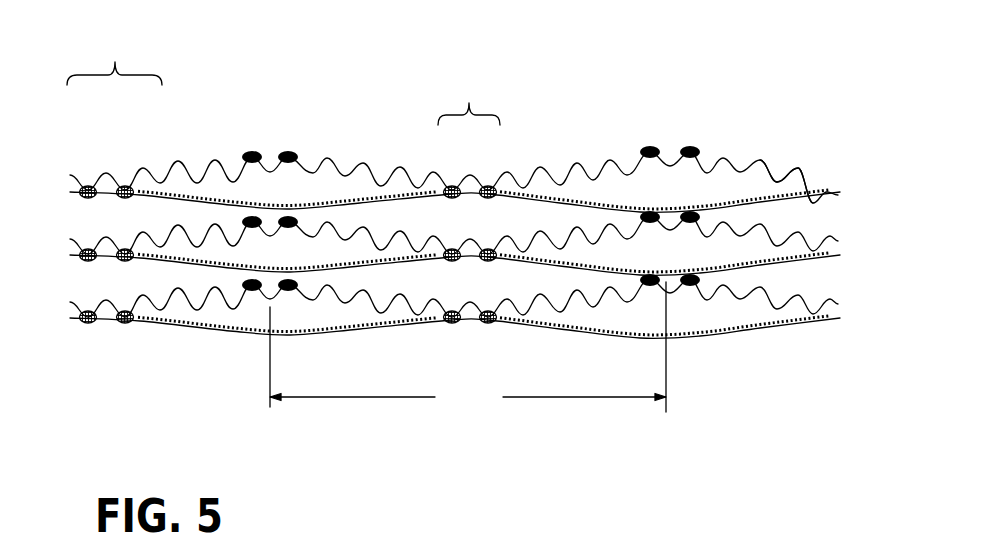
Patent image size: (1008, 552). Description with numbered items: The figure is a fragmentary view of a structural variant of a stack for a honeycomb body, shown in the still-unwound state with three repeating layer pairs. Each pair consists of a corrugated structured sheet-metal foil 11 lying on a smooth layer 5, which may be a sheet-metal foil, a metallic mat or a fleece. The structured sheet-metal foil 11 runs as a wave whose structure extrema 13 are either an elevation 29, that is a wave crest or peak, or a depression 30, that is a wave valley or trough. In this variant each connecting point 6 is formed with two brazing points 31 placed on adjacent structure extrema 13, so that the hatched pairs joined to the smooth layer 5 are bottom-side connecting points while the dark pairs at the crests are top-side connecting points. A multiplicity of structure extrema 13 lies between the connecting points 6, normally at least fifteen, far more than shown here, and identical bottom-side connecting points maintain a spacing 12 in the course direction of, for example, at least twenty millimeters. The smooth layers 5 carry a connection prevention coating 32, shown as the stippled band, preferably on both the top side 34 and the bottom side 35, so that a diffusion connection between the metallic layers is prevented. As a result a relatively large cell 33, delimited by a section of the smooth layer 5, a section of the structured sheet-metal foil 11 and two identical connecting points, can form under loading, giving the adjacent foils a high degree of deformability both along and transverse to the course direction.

The smooth layer 5 is at (737, 338).
The connecting point 6 is at (469, 133).
The structured sheet-metal foil 11 is at (327, 158).
The spacing 12 is at (468, 350).
The structure extremum 13 is at (112, 113).
The elevation 29 is at (103, 177).
The depression 30 is at (162, 183).
The brazing point 31 is at (445, 184).
The connection prevention coating 32 is at (740, 200).
The cell 33 is at (214, 316).
The top side 34 is at (814, 170).
The bottom side 35 is at (798, 181).